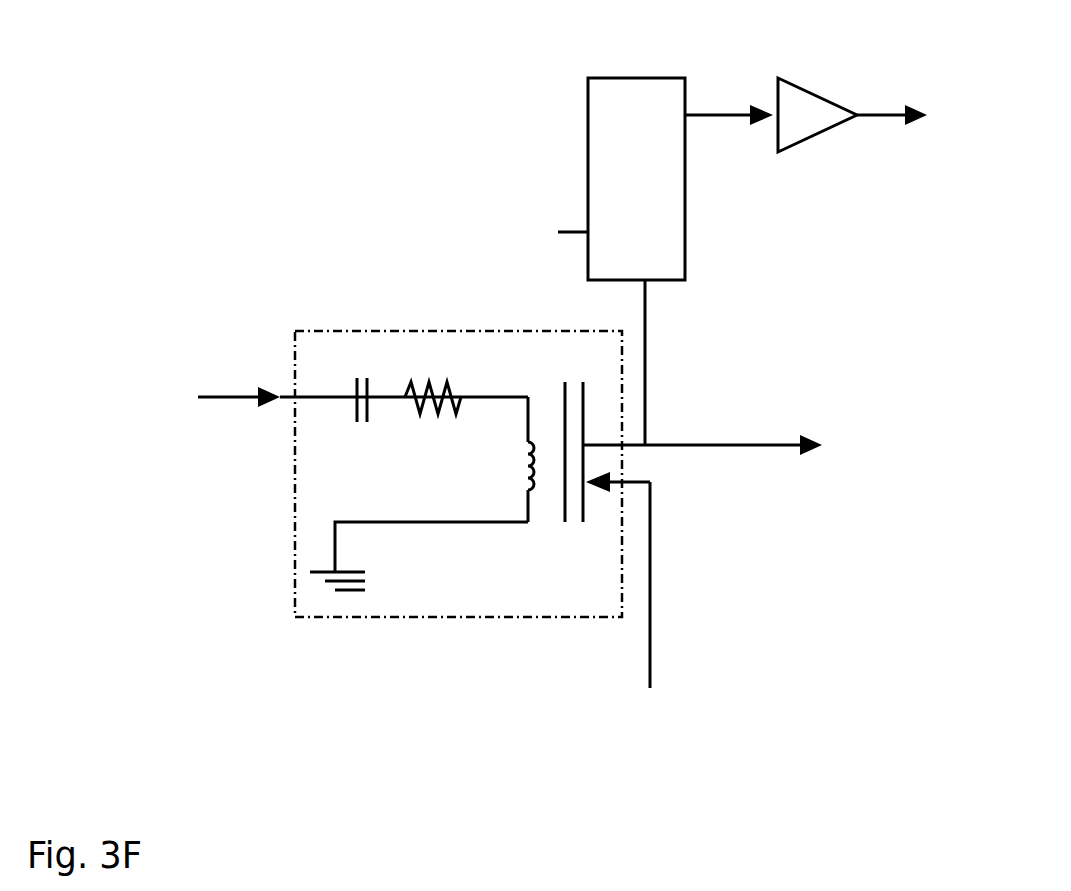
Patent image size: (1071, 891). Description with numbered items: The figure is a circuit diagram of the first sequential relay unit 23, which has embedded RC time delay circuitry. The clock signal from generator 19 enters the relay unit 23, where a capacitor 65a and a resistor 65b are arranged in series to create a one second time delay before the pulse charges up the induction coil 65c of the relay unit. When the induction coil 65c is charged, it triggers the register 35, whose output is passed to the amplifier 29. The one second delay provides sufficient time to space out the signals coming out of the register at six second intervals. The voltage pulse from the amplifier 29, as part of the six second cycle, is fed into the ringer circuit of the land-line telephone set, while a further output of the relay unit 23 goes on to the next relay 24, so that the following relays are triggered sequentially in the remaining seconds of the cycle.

The register 35 is at (614, 236).
The amplifier 29 is at (806, 98).
The relay 24 is at (715, 569).
The clock signal generator 19 is at (234, 427).
The relay unit 23 is at (446, 543).
The capacitor 65a is at (355, 376).
The resistor 65b is at (437, 372).
The induction coil 65c is at (499, 459).